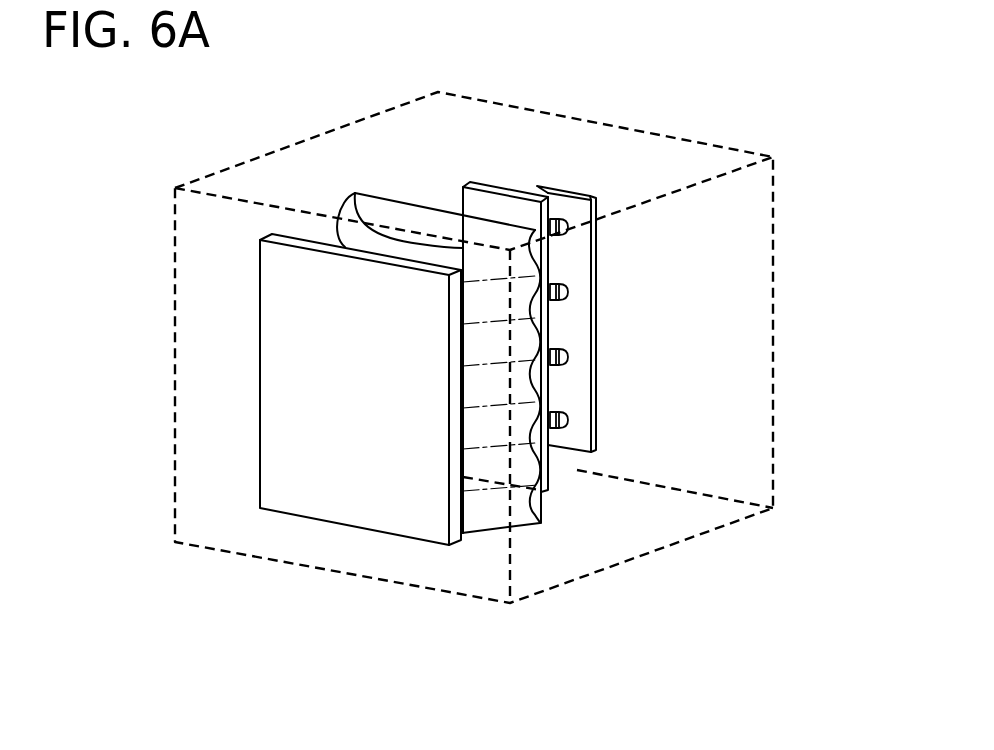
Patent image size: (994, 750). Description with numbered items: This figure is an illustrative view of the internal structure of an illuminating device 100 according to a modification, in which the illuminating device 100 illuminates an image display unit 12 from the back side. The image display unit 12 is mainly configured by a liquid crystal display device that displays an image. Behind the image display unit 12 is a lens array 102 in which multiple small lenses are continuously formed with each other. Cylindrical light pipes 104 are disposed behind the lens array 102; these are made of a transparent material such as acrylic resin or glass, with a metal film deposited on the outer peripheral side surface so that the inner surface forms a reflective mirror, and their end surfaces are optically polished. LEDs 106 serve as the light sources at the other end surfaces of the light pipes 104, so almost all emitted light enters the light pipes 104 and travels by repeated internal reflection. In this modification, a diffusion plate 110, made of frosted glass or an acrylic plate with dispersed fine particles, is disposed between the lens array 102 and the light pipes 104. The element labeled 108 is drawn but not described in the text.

The illuminating device 100 is at (712, 138).
The image display unit 12 is at (260, 348).
The lens array 102 is at (340, 207).
The light pipes 104 is at (552, 243).
The LEDs 106 is at (562, 221).
The terminal plate 108 is at (568, 190).
The diffusion plate 110 is at (498, 186).